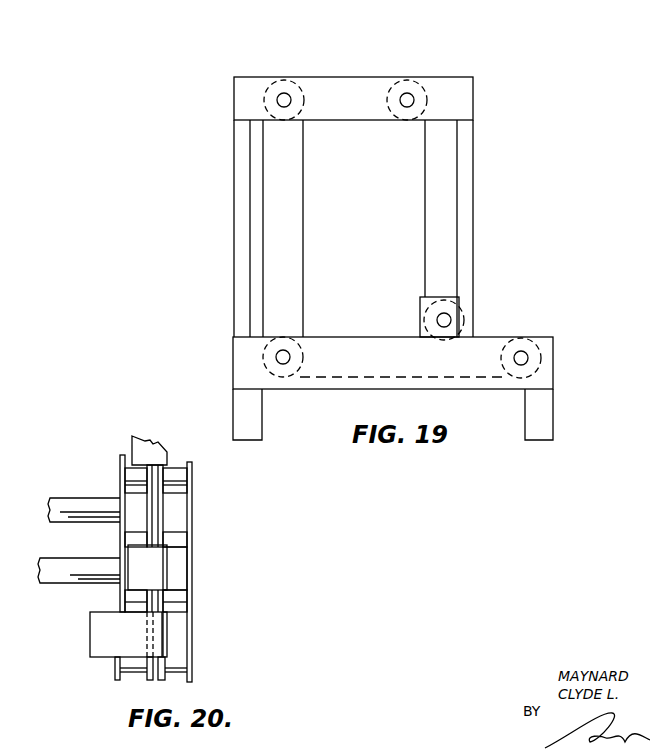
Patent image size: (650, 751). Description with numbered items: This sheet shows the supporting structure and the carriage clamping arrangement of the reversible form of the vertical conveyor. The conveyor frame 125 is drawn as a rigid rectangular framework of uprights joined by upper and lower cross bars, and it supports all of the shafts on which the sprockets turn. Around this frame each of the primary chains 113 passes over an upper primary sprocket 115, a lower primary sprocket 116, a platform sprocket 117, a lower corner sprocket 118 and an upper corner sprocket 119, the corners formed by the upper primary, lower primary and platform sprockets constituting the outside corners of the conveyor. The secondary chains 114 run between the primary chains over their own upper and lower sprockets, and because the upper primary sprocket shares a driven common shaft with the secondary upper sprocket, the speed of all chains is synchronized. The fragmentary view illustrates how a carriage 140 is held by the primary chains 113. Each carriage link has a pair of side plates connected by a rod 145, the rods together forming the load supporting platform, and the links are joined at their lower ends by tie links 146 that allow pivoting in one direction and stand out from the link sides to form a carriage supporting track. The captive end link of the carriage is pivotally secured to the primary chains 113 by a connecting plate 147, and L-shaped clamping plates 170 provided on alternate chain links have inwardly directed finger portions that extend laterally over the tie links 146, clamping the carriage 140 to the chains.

In FIG. 19, the primary chains 113 is at (397, 258).
In FIG. 20, the primary chains 113 is at (194, 629).
In FIG. 19, the secondary chains 114 is at (306, 258).
In FIG. 19, the upper primary sprocket 115 is at (288, 82).
In FIG. 19, the lower primary sprocket 116 is at (266, 350).
In FIG. 19, the platform sprocket 117 is at (532, 339).
In FIG. 19, the lower corner sprocket 118 is at (456, 306).
In FIG. 19, the upper corner sprocket 119 is at (412, 82).
In FIG. 19, the conveyor frame 125 is at (484, 158).
In FIG. 20, the carriage 140 is at (98, 590).
In FIG. 20, the rod 145 is at (70, 505).
In FIG. 20, the tie links 146 is at (133, 477).
In FIG. 20, the connecting plate 147 is at (100, 630).
In FIG. 20, the clamping plates 170 is at (139, 441).